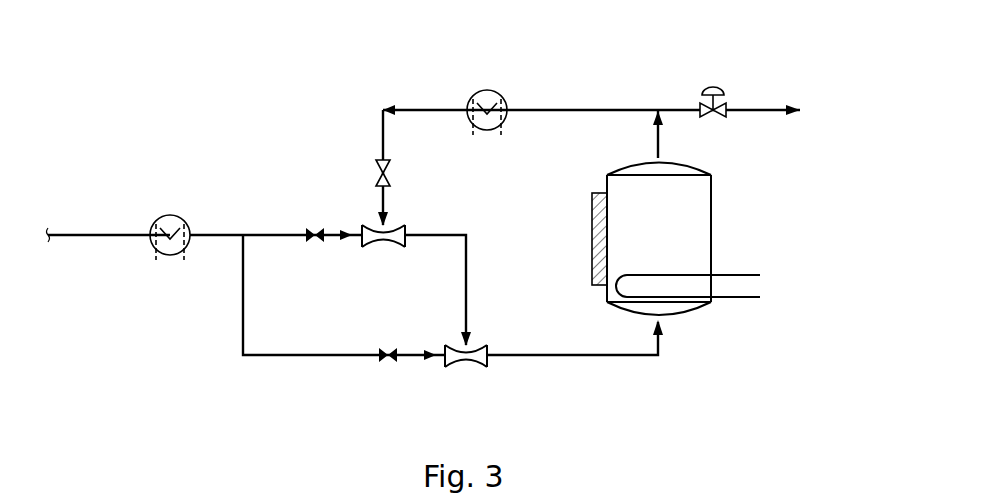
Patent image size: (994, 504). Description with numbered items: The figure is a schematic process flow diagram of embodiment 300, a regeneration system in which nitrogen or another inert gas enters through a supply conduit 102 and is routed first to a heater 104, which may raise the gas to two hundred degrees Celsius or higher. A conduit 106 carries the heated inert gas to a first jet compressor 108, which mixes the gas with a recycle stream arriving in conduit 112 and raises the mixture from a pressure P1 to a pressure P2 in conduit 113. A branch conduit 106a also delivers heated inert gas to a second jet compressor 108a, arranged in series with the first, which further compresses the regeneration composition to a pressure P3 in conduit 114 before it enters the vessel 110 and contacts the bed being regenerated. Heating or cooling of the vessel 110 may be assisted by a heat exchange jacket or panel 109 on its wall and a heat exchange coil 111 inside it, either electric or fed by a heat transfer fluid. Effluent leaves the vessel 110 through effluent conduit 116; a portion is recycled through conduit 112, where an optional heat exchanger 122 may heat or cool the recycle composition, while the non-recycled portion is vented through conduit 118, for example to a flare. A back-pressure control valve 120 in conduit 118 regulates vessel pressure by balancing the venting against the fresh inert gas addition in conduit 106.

The embodiment 300 is at (245, 100).
The supply conduit 102 is at (122, 232).
The heater 104 is at (170, 215).
The conduit 106 is at (265, 232).
The jet compressor 108 is at (400, 250).
The conduit 113 is at (468, 285).
The conduit 106a is at (312, 358).
The second jet compressor 108a is at (478, 370).
The conduit 114 is at (575, 358).
The vessel 110 is at (682, 251).
The heat exchange jacket or panel 109 is at (592, 228).
The heat exchange coil 111 is at (733, 275).
The effluent conduit 116 is at (656, 140).
The conduit 112 is at (605, 108).
The heat exchanger 122 is at (480, 92).
The conduit 118 is at (766, 112).
The back-pressure control valve 120 is at (710, 87).